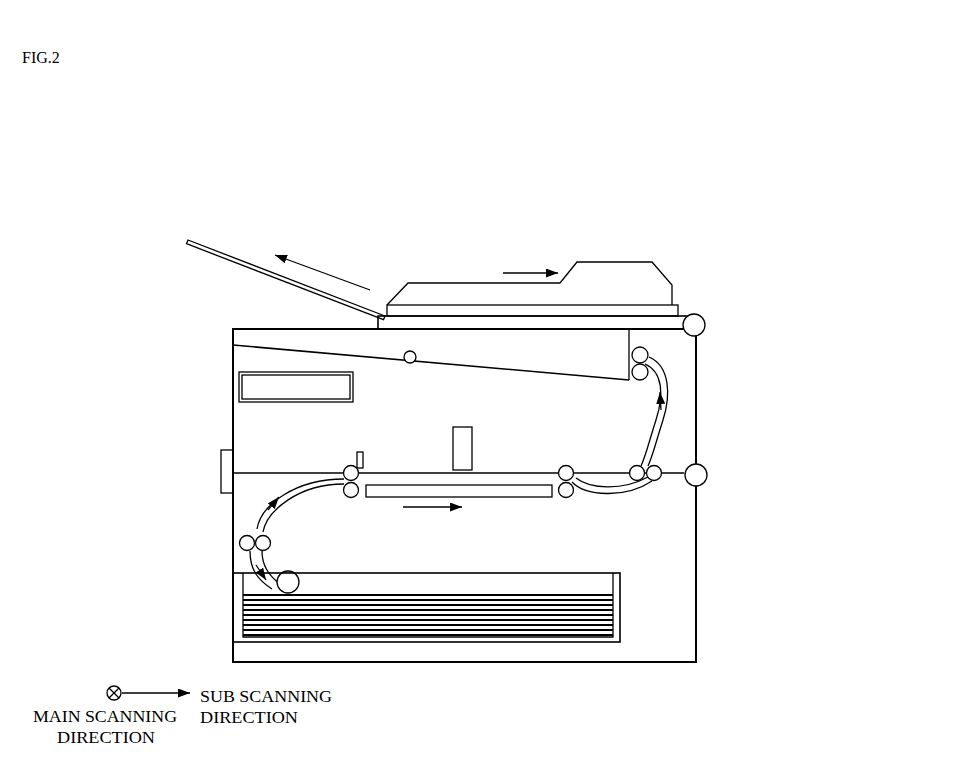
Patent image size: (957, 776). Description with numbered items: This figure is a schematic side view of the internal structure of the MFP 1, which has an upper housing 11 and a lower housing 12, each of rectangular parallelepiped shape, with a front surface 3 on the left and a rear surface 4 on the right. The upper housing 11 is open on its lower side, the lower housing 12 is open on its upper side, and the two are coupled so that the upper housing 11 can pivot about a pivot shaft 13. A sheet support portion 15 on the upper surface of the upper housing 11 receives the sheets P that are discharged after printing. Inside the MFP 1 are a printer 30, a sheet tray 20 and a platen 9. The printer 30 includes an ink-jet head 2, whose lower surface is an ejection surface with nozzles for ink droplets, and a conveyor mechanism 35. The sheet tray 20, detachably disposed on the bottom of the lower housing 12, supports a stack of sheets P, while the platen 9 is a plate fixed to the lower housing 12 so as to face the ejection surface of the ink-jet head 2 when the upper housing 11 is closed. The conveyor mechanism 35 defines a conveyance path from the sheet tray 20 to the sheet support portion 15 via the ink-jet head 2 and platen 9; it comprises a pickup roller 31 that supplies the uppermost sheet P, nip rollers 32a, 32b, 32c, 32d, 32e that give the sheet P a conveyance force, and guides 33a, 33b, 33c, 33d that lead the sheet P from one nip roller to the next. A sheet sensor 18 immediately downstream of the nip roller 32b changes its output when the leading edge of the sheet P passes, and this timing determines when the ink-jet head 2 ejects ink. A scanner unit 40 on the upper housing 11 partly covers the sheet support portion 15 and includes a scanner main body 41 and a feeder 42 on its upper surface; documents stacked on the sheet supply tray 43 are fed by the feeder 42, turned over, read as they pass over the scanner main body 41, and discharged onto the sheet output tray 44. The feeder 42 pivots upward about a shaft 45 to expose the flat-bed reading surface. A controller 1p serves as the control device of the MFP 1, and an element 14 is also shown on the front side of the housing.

The MFP 1 is at (752, 230).
The controller 1p is at (276, 372).
The ink-jet head 2 is at (462, 427).
The front surface 3 is at (232, 360).
The rear surface 4 is at (697, 363).
The platen 9 is at (483, 499).
The upper housing 11 is at (690, 451).
The lower housing 12 is at (690, 617).
The pivot shaft 13 is at (708, 476).
The connector 14 is at (220, 456).
The sheet support portion 15 is at (411, 364).
The sheet sensor 18 is at (361, 452).
The sheet tray 20 is at (236, 637).
The printer 30 is at (538, 378).
The pickup roller 31 is at (293, 572).
The nip roller 32a is at (239, 543).
The nip roller 32b is at (353, 498).
The nip roller 32c is at (567, 498).
The nip roller 32d is at (649, 487).
The nip roller 32e is at (631, 377).
The guide 33a is at (245, 563).
The guide 33b is at (290, 477).
The guide 33c is at (601, 493).
The guide 33d is at (668, 393).
The conveyor mechanism 35 is at (686, 511).
The scanner unit 40 is at (532, 258).
The scanner main body 41 is at (427, 315).
The feeder 42 is at (596, 297).
The sheet supply tray 43 is at (475, 283).
The sheet output tray 44 is at (196, 242).
The shaft 45 is at (705, 317).
The sheet P is at (413, 593).